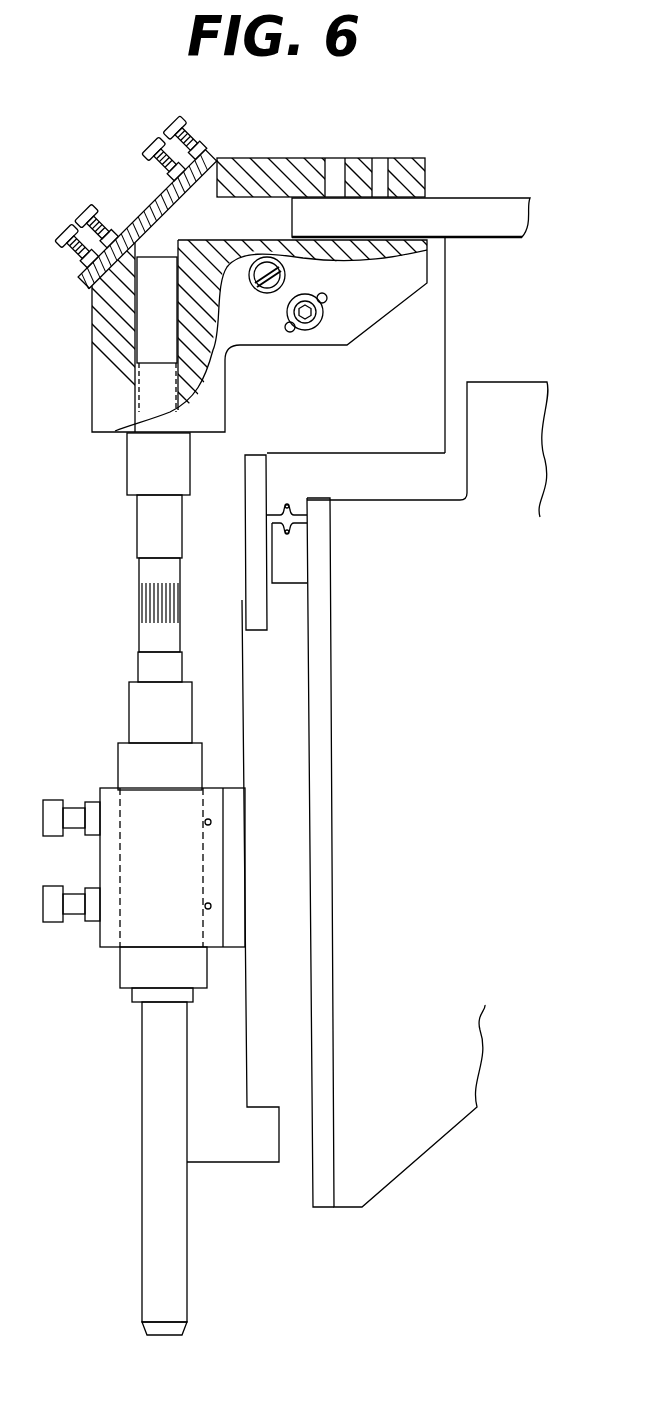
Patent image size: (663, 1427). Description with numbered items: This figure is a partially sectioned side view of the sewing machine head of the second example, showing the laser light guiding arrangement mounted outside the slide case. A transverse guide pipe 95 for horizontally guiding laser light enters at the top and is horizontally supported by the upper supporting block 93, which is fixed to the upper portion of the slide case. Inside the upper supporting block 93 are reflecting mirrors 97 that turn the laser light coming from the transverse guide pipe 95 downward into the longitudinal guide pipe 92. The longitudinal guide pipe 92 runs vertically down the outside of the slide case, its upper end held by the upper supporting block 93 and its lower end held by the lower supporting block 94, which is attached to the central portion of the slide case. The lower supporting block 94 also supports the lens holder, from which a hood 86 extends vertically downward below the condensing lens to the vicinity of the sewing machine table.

The hood 86 is at (153, 1168).
The longitudinal guide pipe 92 is at (137, 590).
The upper supporting block 93 is at (108, 390).
The lower supporting block 94 is at (107, 933).
The transverse guide pipe 95 is at (463, 215).
The reflecting mirror 97 is at (177, 217).